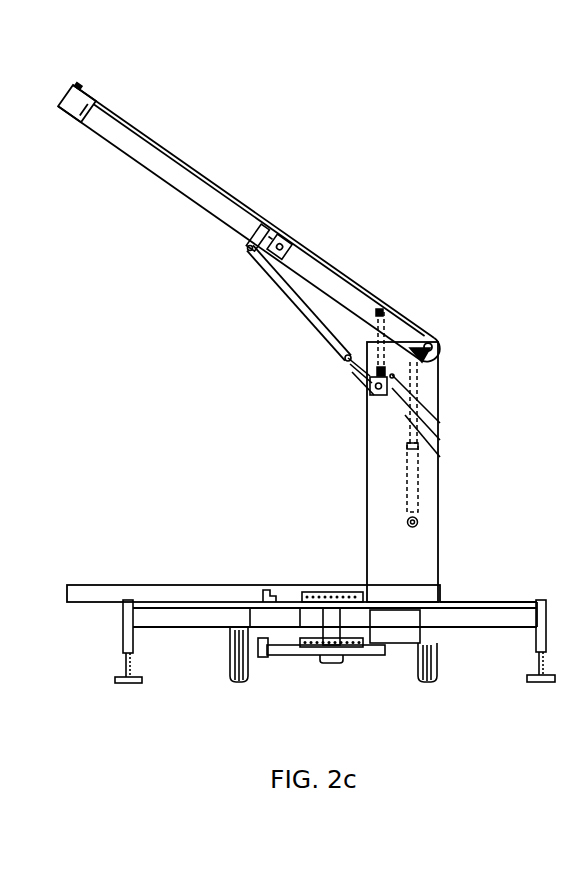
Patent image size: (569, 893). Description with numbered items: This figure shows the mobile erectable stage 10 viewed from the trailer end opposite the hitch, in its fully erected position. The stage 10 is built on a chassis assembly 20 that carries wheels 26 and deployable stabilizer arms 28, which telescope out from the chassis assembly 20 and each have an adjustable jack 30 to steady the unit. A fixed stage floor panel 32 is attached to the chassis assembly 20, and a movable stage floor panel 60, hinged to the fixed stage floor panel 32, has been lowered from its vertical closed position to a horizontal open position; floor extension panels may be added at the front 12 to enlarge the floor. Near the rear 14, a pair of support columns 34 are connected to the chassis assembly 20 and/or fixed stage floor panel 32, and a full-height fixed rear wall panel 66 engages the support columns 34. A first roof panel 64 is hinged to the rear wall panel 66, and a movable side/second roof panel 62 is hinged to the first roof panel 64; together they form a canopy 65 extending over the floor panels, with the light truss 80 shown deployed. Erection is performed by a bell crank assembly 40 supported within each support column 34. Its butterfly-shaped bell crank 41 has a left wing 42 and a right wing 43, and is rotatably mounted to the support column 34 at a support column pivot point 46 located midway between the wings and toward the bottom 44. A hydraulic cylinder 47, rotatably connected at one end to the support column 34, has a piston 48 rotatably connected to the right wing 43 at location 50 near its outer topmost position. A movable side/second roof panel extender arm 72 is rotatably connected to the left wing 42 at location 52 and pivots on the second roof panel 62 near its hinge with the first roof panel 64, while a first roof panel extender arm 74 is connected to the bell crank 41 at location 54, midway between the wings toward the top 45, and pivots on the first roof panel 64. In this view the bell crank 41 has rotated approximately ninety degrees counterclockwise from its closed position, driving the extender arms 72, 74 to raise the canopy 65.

The mobile erectable stage 10 is at (78, 298).
The front 12 is at (70, 583).
The rear 14 is at (363, 580).
The chassis assembly 20 is at (284, 696).
The wheels 26 is at (423, 680).
The stabilizer arms 28 is at (197, 628).
The adjustable jack 30 is at (118, 635).
The fixed stage floor panel 32 is at (298, 580).
The support columns 34 is at (397, 563).
The bell crank assemblies 40 is at (322, 356).
The bell crank 41 is at (440, 423).
The left wing 42 is at (367, 373).
The right wing 43 is at (388, 380).
The bottom of bell crank 44 is at (373, 397).
The top of bell crank 45 is at (373, 357).
The support column pivot point 46 is at (440, 440).
The hydraulic cylinder 47 is at (417, 500).
The piston 48 is at (440, 457).
The piston connection location 50 is at (432, 357).
The extender arm connection location 52 is at (345, 360).
The first roof panel extender arm connection location 54 is at (402, 346).
The movable stage floor panel 60 is at (222, 578).
The movable side/second roof panel 62 is at (157, 143).
The first roof panel 64 is at (322, 258).
The canopy 65 is at (285, 163).
The rear wall panel 66 is at (440, 562).
The movable side/second roof panel extender arm 72 is at (288, 300).
The first roof panel extender arm 74 is at (390, 316).
The light truss 80 is at (62, 103).